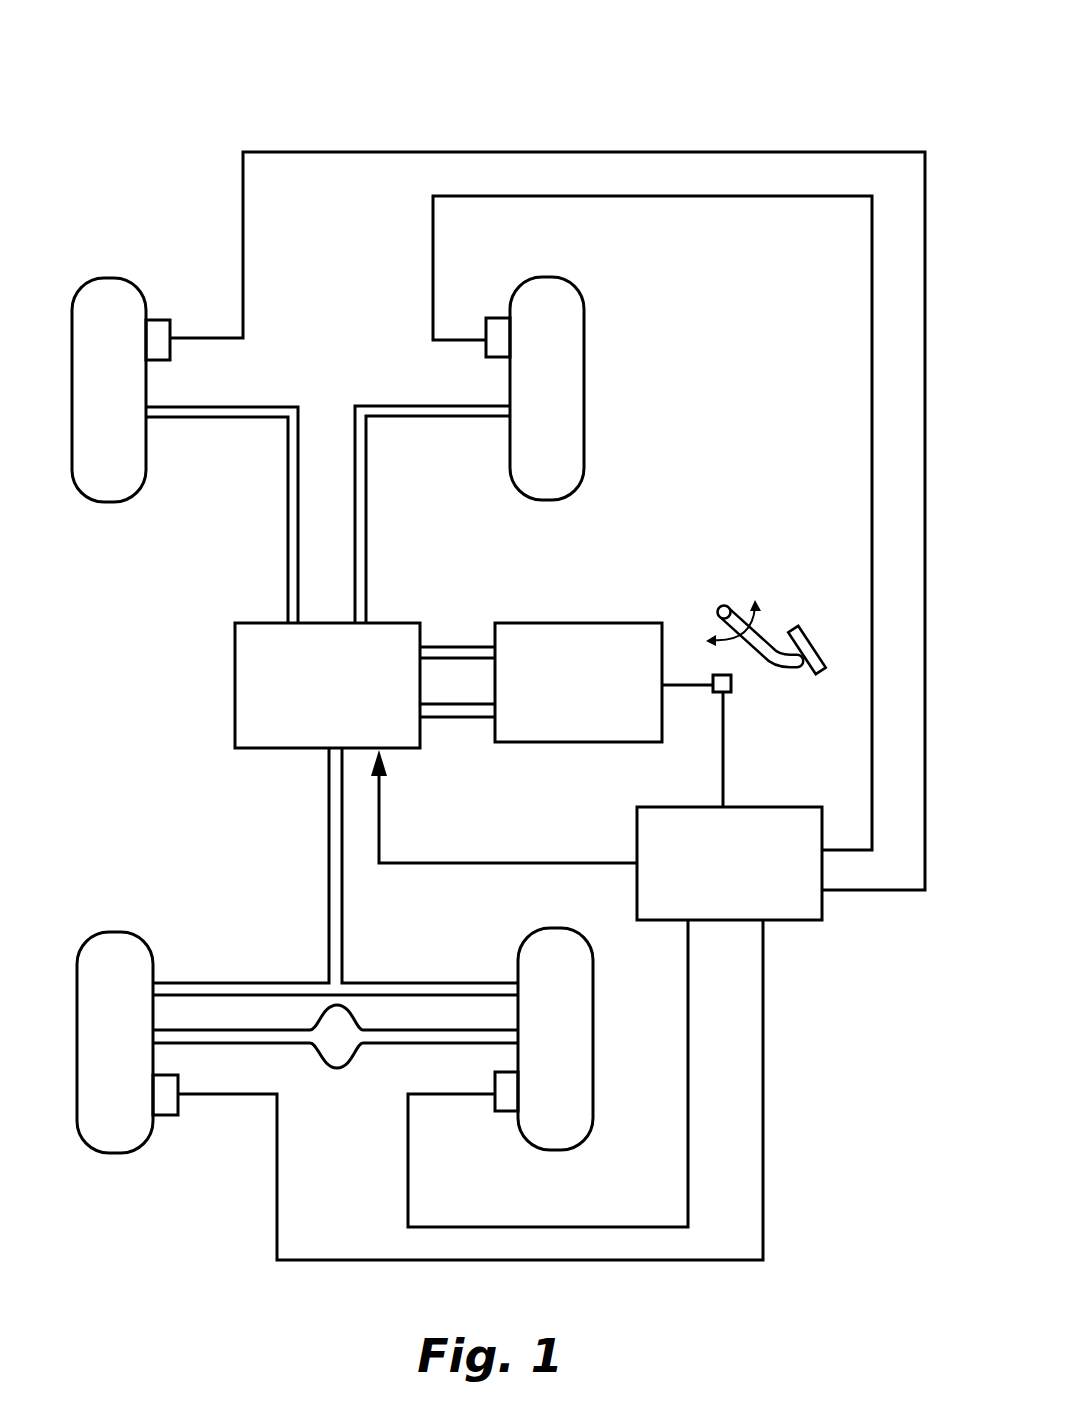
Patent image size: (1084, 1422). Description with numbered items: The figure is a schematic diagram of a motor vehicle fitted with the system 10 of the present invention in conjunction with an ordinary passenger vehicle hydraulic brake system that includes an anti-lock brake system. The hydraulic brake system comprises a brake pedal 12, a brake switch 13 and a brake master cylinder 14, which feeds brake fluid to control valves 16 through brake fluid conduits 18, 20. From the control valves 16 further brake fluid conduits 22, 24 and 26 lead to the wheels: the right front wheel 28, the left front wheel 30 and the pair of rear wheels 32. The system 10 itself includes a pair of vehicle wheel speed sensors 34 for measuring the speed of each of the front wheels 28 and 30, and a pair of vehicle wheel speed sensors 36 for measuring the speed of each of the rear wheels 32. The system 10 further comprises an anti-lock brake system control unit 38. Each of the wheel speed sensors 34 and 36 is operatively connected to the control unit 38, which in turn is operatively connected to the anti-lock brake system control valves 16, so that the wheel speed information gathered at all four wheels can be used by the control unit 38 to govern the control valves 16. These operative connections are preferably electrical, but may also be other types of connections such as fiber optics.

The system 10 is at (363, 90).
The brake pedal 12 is at (770, 634).
The brake switch 13 is at (713, 681).
The brake master cylinder 14 is at (605, 623).
The control valves 16 is at (235, 675).
The brake fluid conduit 18 is at (468, 647).
The brake fluid conduit 20 is at (470, 717).
The brake fluid conduit 22 is at (366, 513).
The brake fluid conduit 24 is at (288, 527).
The brake fluid conduit 26 is at (342, 930).
The right front wheel 28 is at (584, 340).
The left front wheel 30 is at (106, 278).
The rear wheels 32 is at (128, 932).
The vehicle wheel speed sensors 34 is at (162, 320).
The vehicle wheel speed sensors 36 is at (168, 1115).
The anti-lock brake system control unit 38 is at (775, 807).